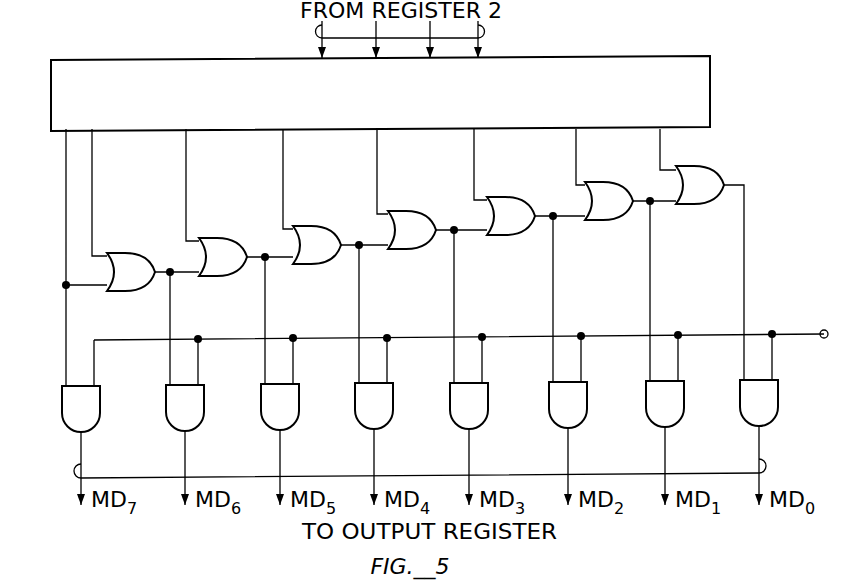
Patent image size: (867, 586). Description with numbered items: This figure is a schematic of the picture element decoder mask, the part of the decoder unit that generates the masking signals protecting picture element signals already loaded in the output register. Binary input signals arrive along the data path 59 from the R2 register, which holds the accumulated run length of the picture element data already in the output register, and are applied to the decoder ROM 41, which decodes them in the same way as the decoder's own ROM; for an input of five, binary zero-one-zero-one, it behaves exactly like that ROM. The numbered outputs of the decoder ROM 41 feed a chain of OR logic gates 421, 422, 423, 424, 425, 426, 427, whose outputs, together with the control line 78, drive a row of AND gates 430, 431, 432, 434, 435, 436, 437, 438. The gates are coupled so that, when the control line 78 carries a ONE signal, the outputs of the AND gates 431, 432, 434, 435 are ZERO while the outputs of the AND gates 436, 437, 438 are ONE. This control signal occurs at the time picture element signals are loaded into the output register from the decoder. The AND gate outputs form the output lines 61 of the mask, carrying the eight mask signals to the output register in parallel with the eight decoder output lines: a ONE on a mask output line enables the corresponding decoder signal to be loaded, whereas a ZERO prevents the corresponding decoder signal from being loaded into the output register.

The decoder ROM 41 is at (708, 57).
The data path 59 is at (485, 32).
The control line 78 is at (796, 333).
The output lines of the mask 61 is at (766, 466).
The OR logic gate 421 is at (730, 161).
The OR logic gate 422 is at (627, 181).
The OR logic gate 423 is at (524, 189).
The OR logic gate 424 is at (430, 210).
The OR logic gate 425 is at (334, 225).
The OR logic gate 426 is at (242, 237).
The OR logic gate 427 is at (148, 252).
The AND gate 430 is at (778, 406).
The AND gate 431 is at (684, 413).
The AND gate 432 is at (587, 414).
The AND gate 434 is at (488, 415).
The AND gate 435 is at (393, 415).
The AND gate 436 is at (299, 416).
The AND gate 437 is at (204, 417).
The AND gate 438 is at (100, 418).